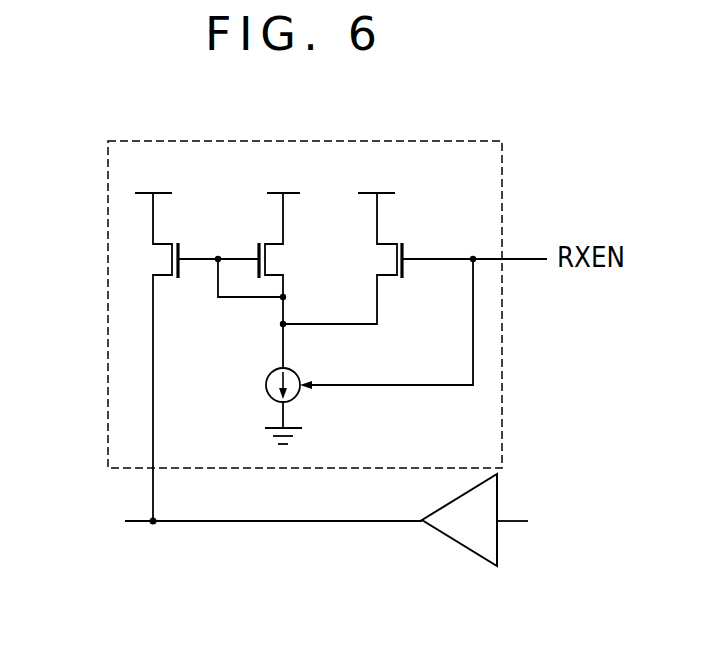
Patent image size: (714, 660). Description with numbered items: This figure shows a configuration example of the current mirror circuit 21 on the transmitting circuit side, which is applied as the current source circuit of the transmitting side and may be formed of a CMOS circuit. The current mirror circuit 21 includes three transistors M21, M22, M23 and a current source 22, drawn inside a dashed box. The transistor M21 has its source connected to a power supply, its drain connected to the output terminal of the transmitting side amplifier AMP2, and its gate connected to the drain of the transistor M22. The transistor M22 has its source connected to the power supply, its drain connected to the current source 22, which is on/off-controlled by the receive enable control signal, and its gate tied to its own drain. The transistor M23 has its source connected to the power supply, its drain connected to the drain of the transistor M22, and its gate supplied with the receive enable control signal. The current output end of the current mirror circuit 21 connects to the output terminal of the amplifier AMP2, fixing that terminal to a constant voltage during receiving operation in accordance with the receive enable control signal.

The current mirror circuit 21 is at (393, 140).
The current source 22 is at (297, 371).
The transistor M21 is at (160, 263).
The transistor M22 is at (282, 269).
The transistor M23 is at (398, 242).
The transmitting side amplifier AMP2 is at (467, 546).